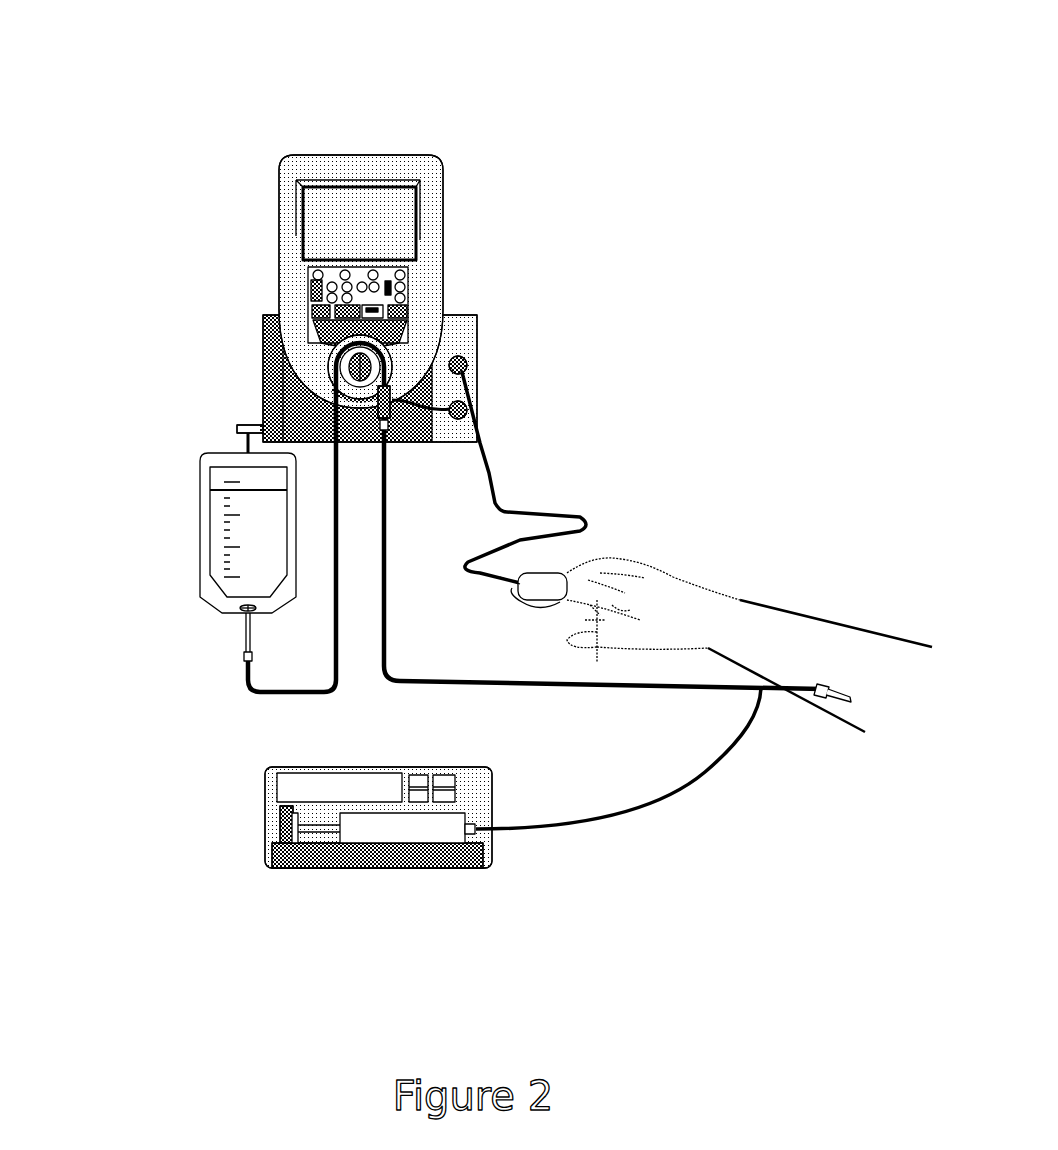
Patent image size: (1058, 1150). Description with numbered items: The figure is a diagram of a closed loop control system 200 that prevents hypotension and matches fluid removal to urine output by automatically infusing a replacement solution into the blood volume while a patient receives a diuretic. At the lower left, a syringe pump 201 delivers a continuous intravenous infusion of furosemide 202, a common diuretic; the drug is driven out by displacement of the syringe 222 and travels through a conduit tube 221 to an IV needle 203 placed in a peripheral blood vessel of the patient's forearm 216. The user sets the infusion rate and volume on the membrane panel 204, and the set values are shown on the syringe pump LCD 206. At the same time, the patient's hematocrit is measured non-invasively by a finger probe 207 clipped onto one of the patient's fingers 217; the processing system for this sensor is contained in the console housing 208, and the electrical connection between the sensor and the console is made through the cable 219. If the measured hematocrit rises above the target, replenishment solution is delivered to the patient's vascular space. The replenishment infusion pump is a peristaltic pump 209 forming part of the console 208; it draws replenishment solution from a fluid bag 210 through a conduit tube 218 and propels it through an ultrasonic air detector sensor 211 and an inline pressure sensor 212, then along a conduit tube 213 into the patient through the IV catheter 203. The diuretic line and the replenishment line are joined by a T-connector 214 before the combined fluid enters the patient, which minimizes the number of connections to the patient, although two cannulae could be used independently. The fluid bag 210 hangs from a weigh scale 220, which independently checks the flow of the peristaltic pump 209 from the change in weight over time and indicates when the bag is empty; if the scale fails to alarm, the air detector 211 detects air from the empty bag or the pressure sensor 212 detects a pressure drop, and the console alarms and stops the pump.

The closed loop control system 200 is at (515, 80).
The syringe pump 201 is at (377, 870).
The furosemide 202 is at (397, 830).
The IV needle 203 is at (833, 697).
The membrane panel 204 is at (442, 793).
The syringe pump LCD 206 is at (308, 772).
The finger probe 207 is at (537, 587).
The console housing 208 is at (418, 272).
The peristaltic pump 209 is at (327, 362).
The fluid bag 210 is at (203, 453).
The ultrasonic air detector sensor 211 is at (393, 443).
The inline pressure sensor 212 is at (443, 293).
The conduit tube 213 is at (387, 608).
The T-connector 214 is at (760, 685).
The forearm 216 is at (723, 618).
The finger 217 is at (600, 666).
The conduit tube 218 is at (320, 692).
The cable 219 is at (488, 472).
The weigh scale 220 is at (235, 425).
The conduit tube 221 is at (570, 828).
The syringe 222 is at (277, 815).